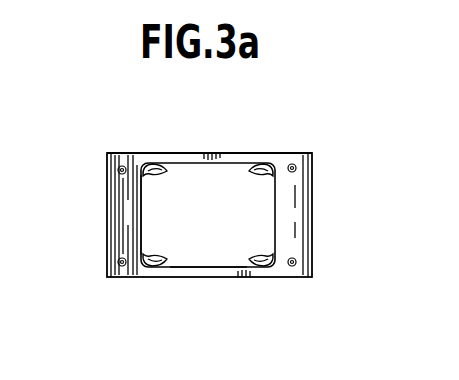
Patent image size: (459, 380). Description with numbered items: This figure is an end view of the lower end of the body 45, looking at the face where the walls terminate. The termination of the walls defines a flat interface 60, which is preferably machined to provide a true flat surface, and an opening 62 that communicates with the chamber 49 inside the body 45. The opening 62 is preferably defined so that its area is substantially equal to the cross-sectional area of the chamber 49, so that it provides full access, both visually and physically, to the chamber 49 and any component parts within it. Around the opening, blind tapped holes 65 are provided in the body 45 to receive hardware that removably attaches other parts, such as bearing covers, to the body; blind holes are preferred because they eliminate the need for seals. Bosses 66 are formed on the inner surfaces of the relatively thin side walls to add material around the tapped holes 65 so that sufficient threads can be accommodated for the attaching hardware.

The body 45 is at (217, 141).
The chamber 49 is at (168, 211).
The interface 60 is at (270, 162).
The opening 62 is at (208, 252).
The blind tapped holes 65 is at (124, 166).
The bosses 66 is at (263, 176).